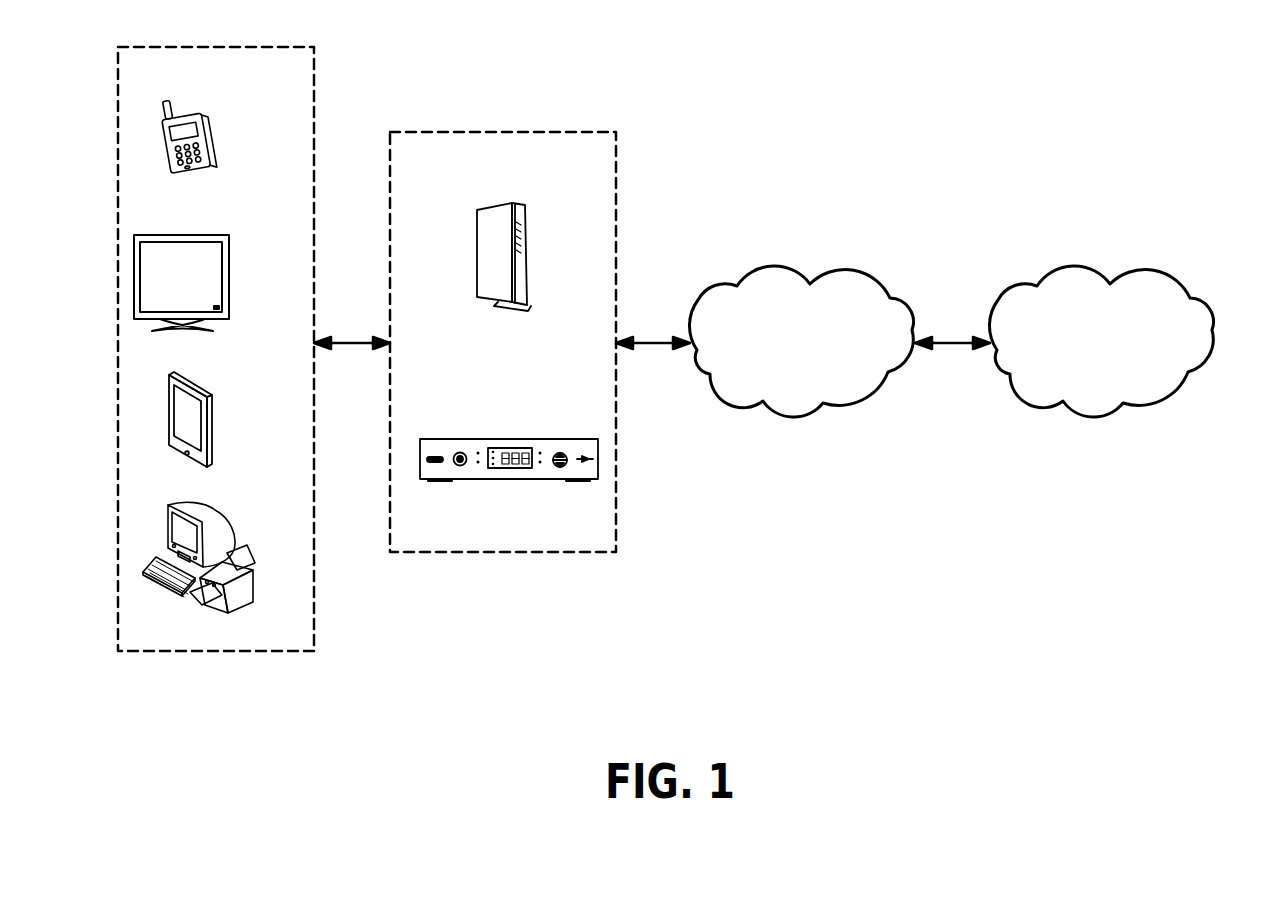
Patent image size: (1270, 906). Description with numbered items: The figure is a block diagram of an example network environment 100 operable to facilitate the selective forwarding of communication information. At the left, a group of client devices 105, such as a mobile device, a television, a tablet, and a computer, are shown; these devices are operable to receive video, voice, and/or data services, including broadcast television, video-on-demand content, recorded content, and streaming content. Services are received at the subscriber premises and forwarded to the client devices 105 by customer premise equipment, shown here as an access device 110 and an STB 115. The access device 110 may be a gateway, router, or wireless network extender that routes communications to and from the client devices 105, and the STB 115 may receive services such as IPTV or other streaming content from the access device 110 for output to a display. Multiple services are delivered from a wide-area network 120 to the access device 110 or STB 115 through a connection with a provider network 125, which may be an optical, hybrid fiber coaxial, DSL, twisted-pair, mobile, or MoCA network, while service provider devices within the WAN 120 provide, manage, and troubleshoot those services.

The network environment 100 is at (665, 407).
The client devices 105 is at (210, 118).
The access device 110 is at (515, 200).
The STB 115 is at (487, 478).
The wide-area network (WAN) 120 is at (1108, 417).
The provider network 125 is at (810, 417).